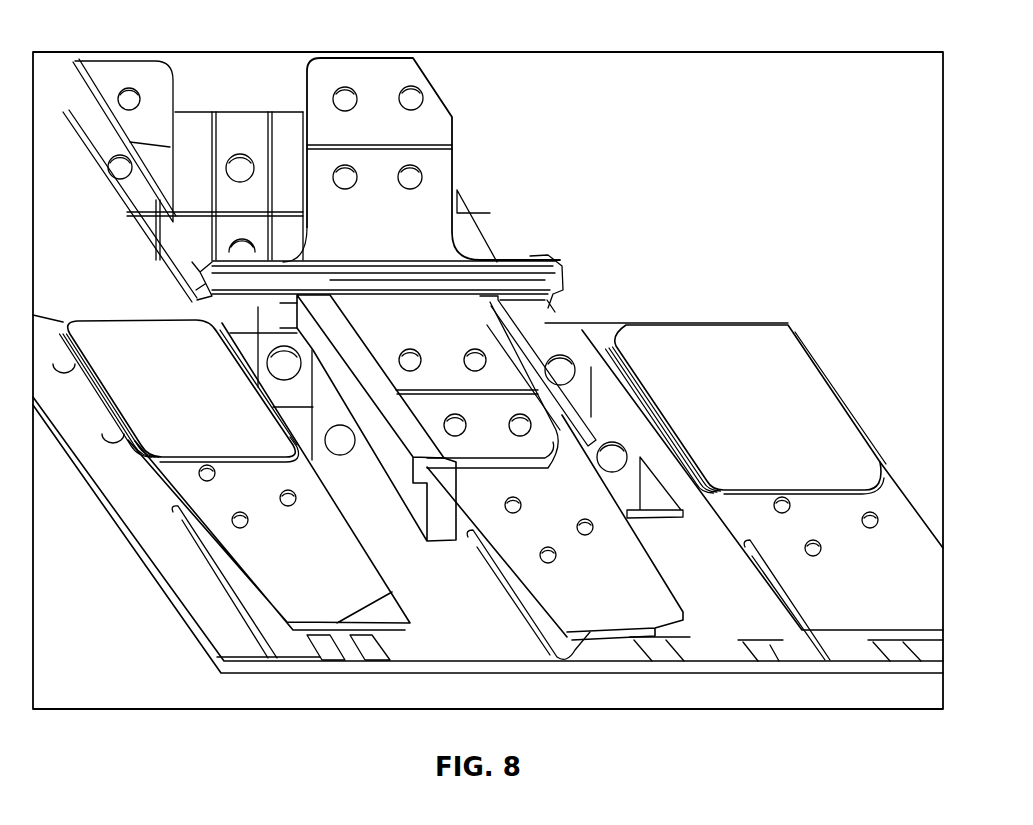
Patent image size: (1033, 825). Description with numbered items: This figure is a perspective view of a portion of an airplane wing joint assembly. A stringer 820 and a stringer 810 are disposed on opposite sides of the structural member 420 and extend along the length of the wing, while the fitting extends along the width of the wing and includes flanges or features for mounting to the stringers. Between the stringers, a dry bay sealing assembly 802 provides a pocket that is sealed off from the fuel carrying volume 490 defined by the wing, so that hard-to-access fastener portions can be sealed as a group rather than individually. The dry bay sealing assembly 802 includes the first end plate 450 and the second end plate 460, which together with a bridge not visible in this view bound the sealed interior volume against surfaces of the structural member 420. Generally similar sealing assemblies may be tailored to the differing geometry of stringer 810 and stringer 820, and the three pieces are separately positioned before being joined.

The structural member 420 is at (655, 636).
The first end plate 450 is at (327, 317).
The second end plate 460 is at (541, 330).
The fuel carrying volume 490 is at (377, 118).
The dry bay sealing assembly 802 is at (448, 550).
The stringer 810 is at (870, 583).
The stringer 820 is at (263, 573).